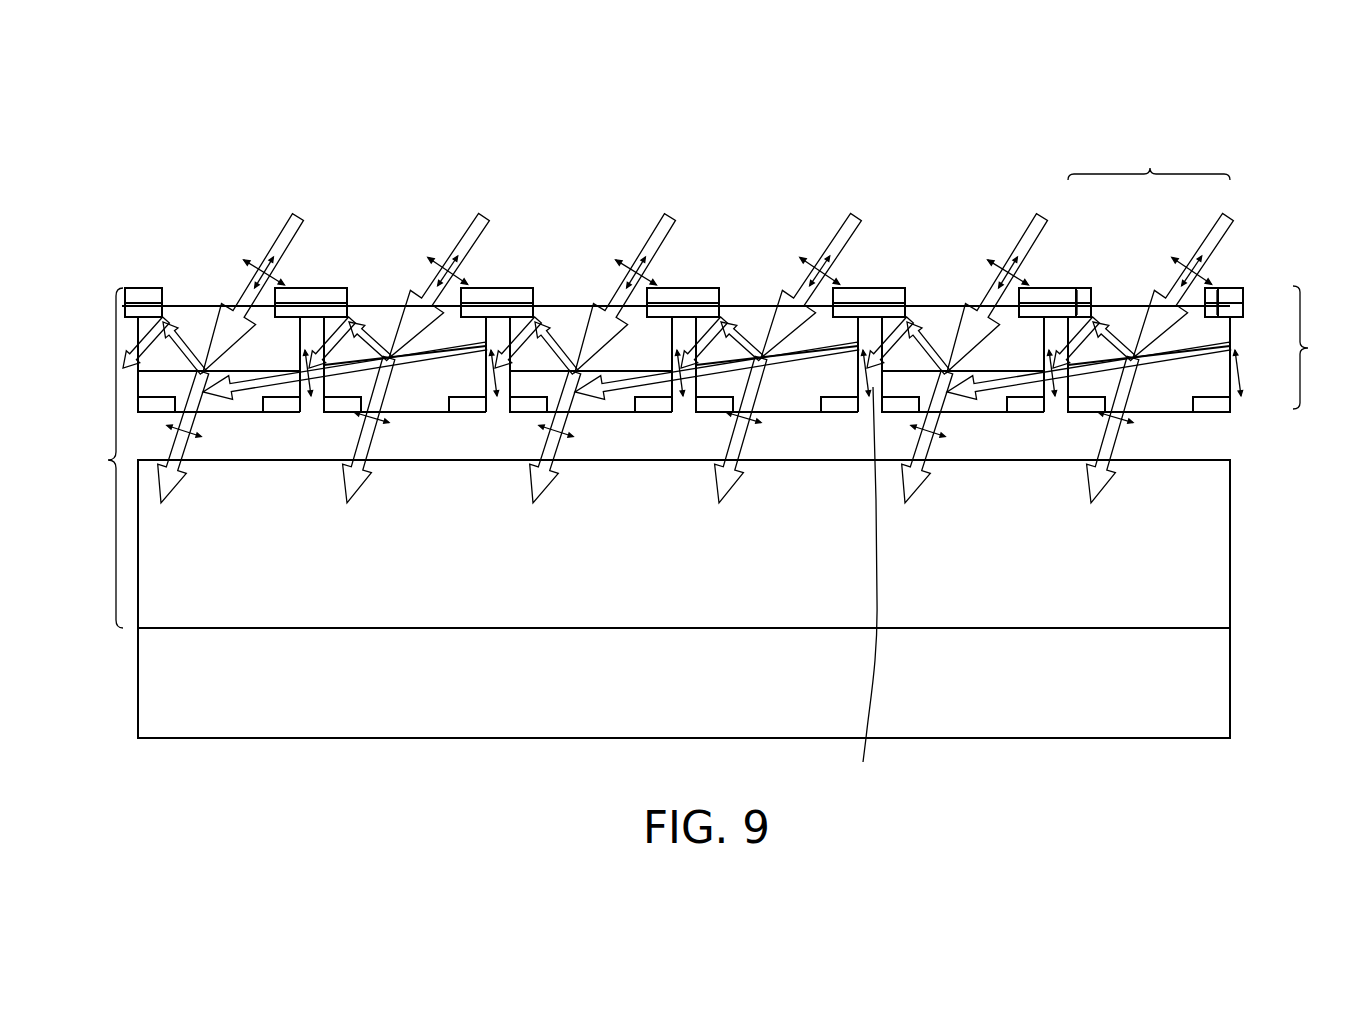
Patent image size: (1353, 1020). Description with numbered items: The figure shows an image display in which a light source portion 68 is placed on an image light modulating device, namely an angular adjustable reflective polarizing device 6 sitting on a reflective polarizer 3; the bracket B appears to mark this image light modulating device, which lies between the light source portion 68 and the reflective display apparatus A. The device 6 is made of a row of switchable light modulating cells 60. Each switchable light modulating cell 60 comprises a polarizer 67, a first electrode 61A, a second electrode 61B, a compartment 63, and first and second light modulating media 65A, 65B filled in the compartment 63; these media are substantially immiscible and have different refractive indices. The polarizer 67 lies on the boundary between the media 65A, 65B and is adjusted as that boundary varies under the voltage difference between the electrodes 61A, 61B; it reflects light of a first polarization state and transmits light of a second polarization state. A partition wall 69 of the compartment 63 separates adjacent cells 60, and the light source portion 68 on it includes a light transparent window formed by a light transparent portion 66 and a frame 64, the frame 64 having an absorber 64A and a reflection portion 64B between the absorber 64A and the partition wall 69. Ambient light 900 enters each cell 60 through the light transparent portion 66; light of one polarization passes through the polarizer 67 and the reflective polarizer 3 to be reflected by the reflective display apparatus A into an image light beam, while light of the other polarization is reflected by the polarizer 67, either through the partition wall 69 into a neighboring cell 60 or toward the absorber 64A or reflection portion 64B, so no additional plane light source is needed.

The reflective polarizer 3 is at (1232, 543).
The reflective display apparatus A is at (1232, 683).
The second region B is at (103, 458).
The angular adjustable reflective polarizing device 6 is at (1311, 347).
The switchable light modulating cell 60 is at (726, 293).
The first electrode 61A is at (1082, 412).
The second electrode 61B is at (1213, 400).
The compartment 63 is at (1232, 329).
The frame 64 is at (1063, 158).
The absorber 64A is at (1053, 292).
The reflection portion 64B is at (1082, 292).
The first light modulating medium 65A is at (1130, 400).
The second light modulating medium 65B is at (1073, 347).
The light transparent portion 66 is at (1130, 305).
The polarizer 67 is at (1217, 352).
The light source portion 68 is at (1149, 157).
The partition wall 69 is at (862, 593).
The ambient light 900 is at (672, 208).